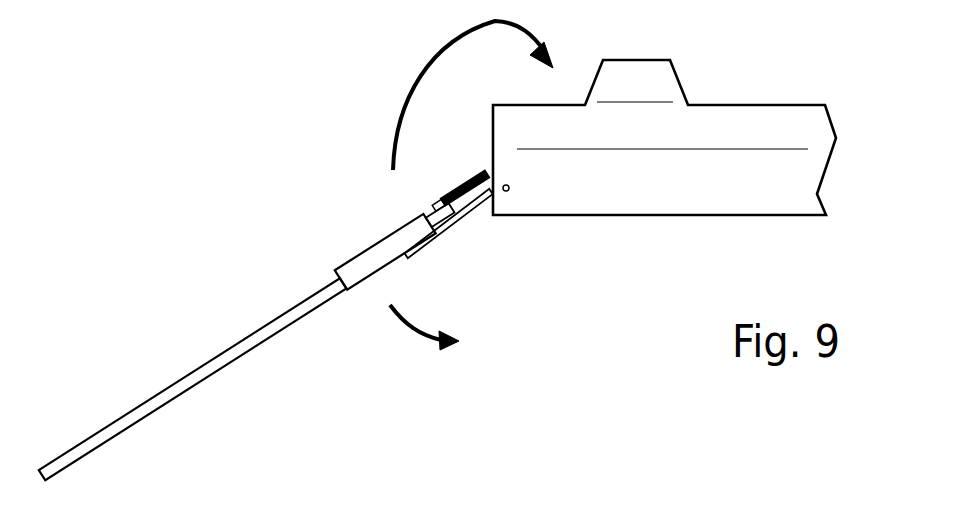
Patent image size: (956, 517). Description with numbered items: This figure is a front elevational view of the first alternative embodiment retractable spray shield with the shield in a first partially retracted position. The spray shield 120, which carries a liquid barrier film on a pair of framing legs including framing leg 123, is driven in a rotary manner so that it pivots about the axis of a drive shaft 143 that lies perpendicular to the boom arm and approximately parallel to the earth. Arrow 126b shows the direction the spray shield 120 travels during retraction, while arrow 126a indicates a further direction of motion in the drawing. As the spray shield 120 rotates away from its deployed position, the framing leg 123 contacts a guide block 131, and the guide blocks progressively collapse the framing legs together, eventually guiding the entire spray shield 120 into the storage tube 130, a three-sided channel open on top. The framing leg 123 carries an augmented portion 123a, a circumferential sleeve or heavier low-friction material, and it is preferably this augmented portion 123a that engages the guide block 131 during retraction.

The spray shield 120 is at (264, 326).
The framing leg 123 is at (182, 380).
The augmented portion 123a is at (372, 250).
The rotation direction arrow 126a is at (407, 330).
The arrow 126b is at (432, 47).
The storage tube 130 is at (664, 122).
The guide block 131 is at (670, 78).
The drive shaft 143 is at (507, 191).